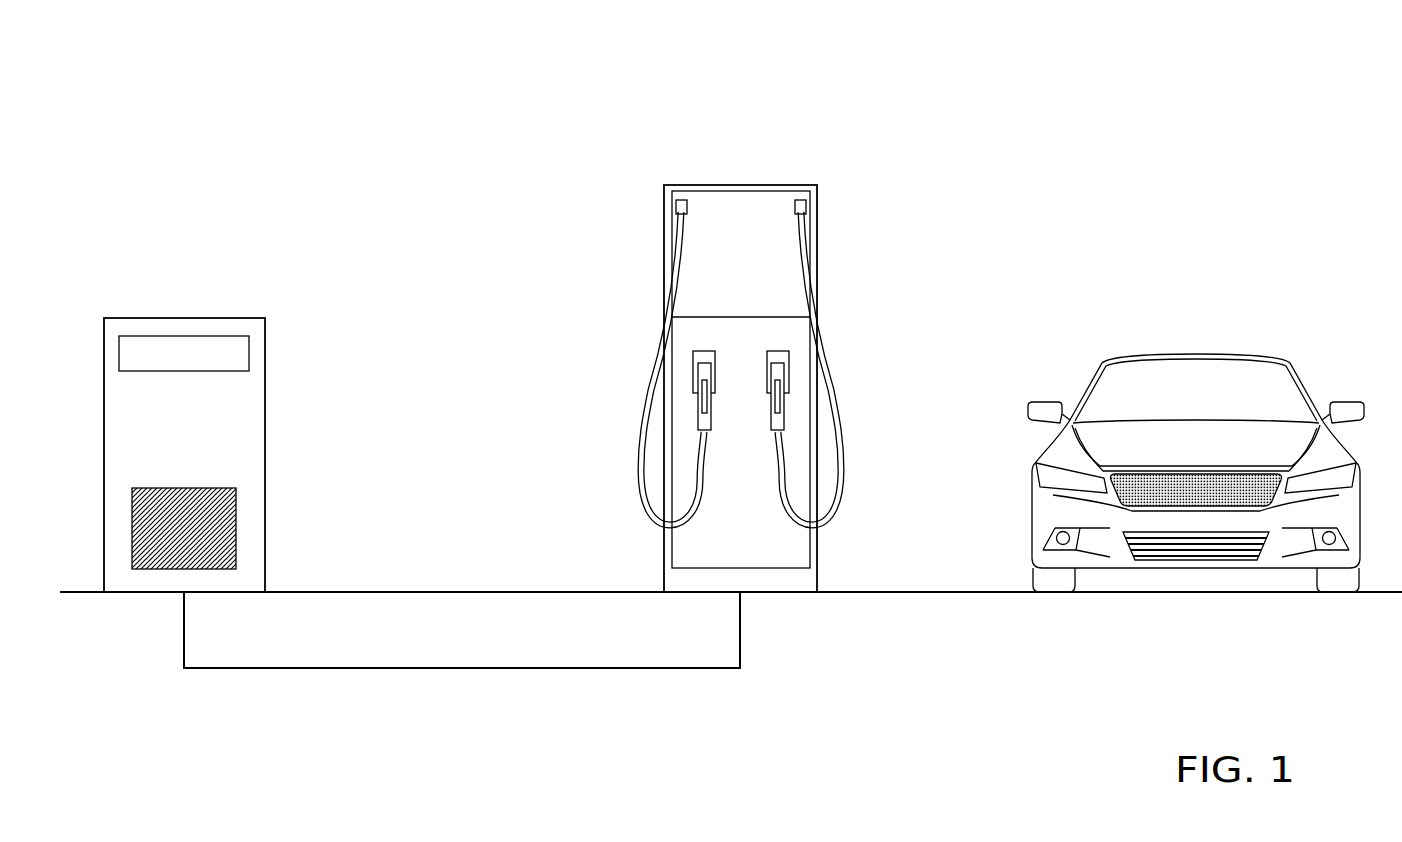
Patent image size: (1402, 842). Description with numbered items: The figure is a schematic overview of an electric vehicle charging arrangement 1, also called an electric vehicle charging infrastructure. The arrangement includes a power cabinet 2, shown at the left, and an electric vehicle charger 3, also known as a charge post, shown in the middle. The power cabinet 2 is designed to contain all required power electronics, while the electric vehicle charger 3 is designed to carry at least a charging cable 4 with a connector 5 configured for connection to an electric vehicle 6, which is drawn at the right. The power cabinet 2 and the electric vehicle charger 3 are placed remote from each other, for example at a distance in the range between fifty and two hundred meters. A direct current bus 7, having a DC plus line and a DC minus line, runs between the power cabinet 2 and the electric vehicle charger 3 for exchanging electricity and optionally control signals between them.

The electric vehicle charging arrangement 1 is at (305, 121).
The power cabinet 2 is at (188, 327).
The electric vehicle charger 3 is at (744, 349).
The charging cable 4 is at (648, 389).
The connector 5 is at (774, 372).
The electric vehicle 6 is at (1199, 372).
The direct current bus 7 is at (421, 670).